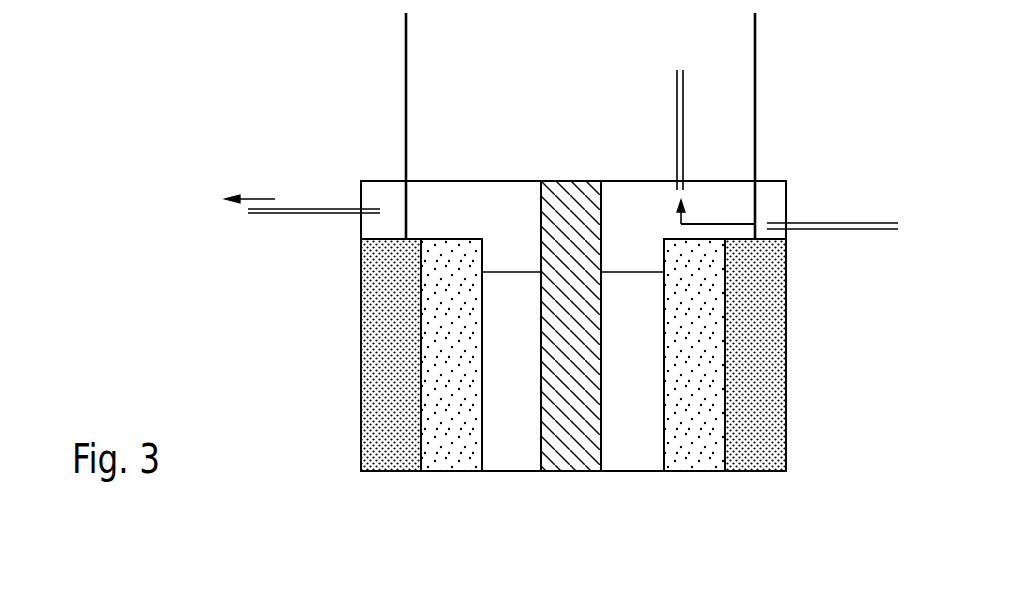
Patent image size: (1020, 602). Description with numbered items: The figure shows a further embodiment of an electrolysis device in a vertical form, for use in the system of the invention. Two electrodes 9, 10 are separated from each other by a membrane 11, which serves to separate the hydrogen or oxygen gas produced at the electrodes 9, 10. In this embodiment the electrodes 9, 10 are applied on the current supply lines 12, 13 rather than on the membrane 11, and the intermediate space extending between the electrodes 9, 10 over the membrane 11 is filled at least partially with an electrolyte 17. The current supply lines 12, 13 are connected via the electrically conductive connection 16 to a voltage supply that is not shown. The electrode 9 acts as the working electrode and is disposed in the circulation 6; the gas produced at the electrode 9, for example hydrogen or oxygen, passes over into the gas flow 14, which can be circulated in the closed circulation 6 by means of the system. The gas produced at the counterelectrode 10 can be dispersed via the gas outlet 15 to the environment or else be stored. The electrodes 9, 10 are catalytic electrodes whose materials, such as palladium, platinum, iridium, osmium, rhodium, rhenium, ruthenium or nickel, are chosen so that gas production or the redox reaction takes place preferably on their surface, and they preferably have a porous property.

The circulation 6 is at (684, 105).
The electrode 9 is at (697, 458).
The electrode 10 is at (453, 456).
The membrane 11 is at (575, 456).
The current supply line 12 is at (758, 458).
The current supply line 13 is at (391, 456).
The gas flow 14 is at (722, 224).
The gas outlet 15 is at (300, 215).
The electrically conductive connection 16 is at (406, 55).
The electrolyte 17 is at (515, 456).